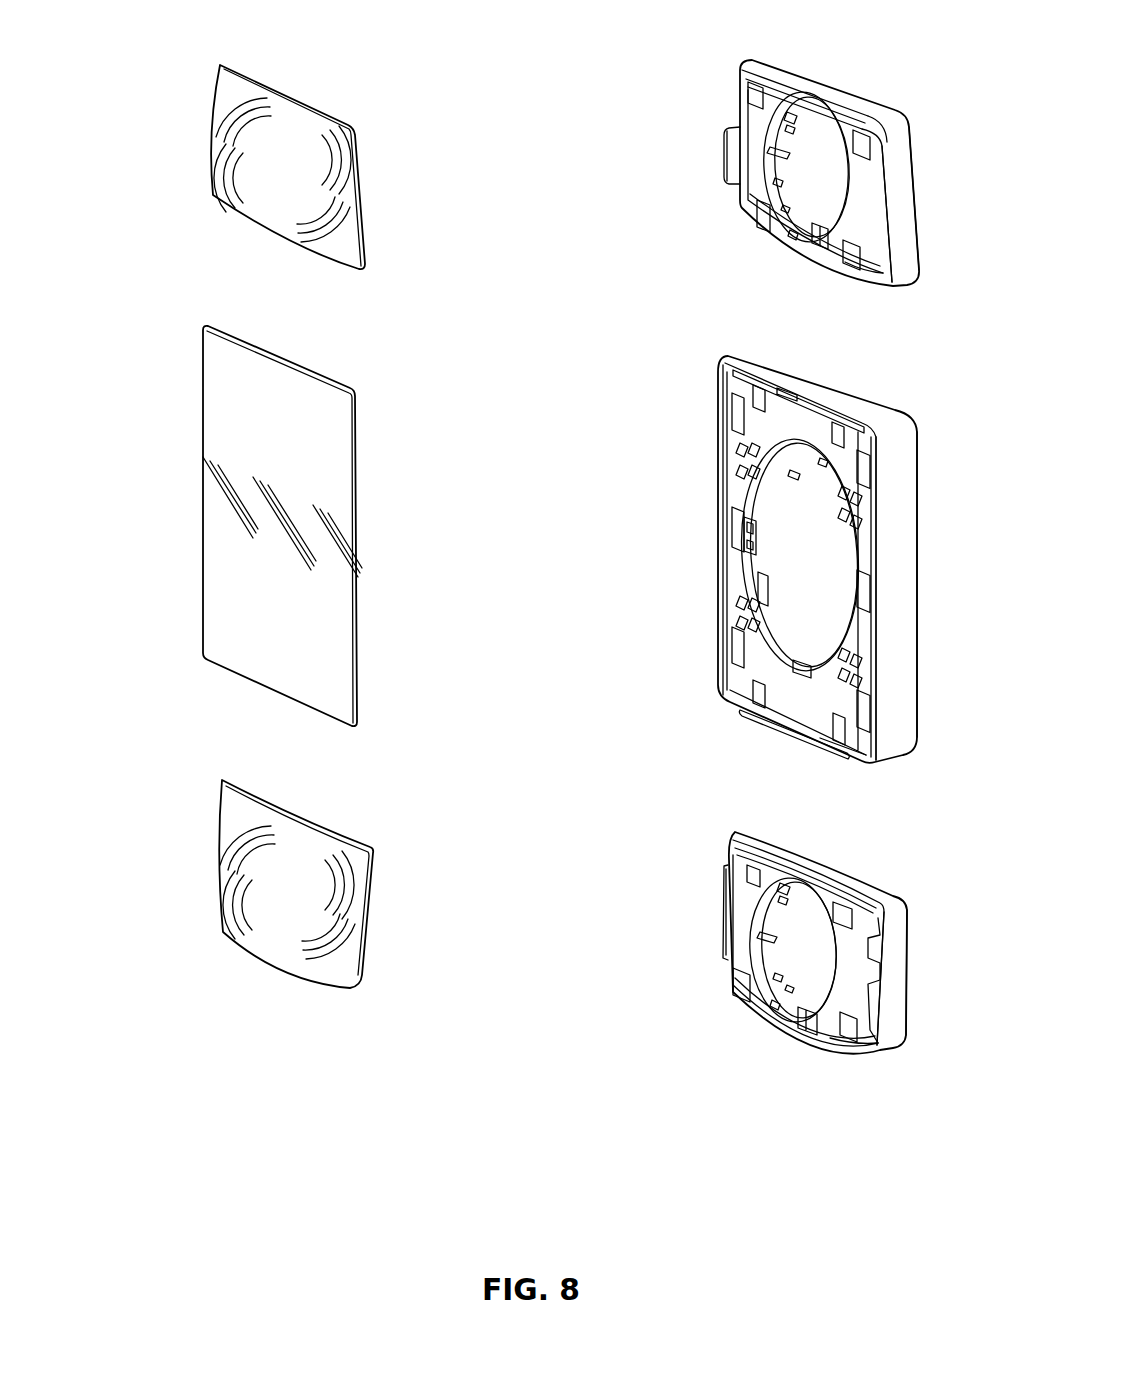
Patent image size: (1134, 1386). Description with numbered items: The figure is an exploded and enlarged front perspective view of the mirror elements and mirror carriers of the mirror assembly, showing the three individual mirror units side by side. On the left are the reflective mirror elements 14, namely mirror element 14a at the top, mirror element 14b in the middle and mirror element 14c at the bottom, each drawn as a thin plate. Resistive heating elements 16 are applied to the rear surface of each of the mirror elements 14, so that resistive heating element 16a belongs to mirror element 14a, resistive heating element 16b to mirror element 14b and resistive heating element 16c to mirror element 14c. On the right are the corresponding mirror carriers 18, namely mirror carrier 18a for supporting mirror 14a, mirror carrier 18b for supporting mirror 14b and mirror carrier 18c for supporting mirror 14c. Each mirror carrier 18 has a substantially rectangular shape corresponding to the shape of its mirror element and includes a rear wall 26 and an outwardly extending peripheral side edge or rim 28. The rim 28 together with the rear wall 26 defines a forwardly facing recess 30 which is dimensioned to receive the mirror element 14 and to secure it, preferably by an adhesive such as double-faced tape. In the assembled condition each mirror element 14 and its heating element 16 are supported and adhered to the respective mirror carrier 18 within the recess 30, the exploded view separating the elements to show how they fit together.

The reflective mirror element 14 is at (253, 1129).
The mirror element 14a is at (222, 192).
The mirror element 14b is at (238, 425).
The mirror element 14c is at (230, 803).
The resistive heating element 16 is at (432, 72).
The resistive heating element 16a is at (363, 200).
The resistive heating element 16b is at (363, 617).
The resistive heating element 16c is at (368, 943).
The mirror carrier 18 is at (806, 1128).
The mirror carrier 18a is at (742, 192).
The mirror carrier 18b is at (730, 437).
The mirror carrier 18c is at (732, 895).
The rear wall 26 is at (913, 157).
The peripheral side edge or rim 28 is at (883, 215).
The forwardly facing recess 30 is at (857, 233).